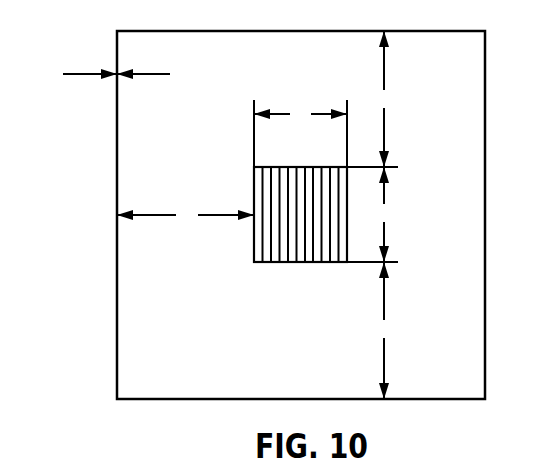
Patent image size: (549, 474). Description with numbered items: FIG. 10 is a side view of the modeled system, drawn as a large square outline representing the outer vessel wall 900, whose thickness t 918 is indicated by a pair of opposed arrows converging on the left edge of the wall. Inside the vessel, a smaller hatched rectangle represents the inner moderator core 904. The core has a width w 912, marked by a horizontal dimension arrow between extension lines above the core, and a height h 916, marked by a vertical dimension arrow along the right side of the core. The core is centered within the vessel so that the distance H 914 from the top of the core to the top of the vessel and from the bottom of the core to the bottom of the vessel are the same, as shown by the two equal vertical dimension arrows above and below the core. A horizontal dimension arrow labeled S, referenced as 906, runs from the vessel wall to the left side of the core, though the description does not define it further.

The outer vessel wall 900 is at (434, 31).
The inner moderator core 904 is at (254, 263).
The spacing S 906 is at (187, 226).
The width w 912 is at (297, 103).
The distance H 914 is at (392, 99).
The height h 916 is at (391, 218).
The thickness t 918 is at (96, 56).